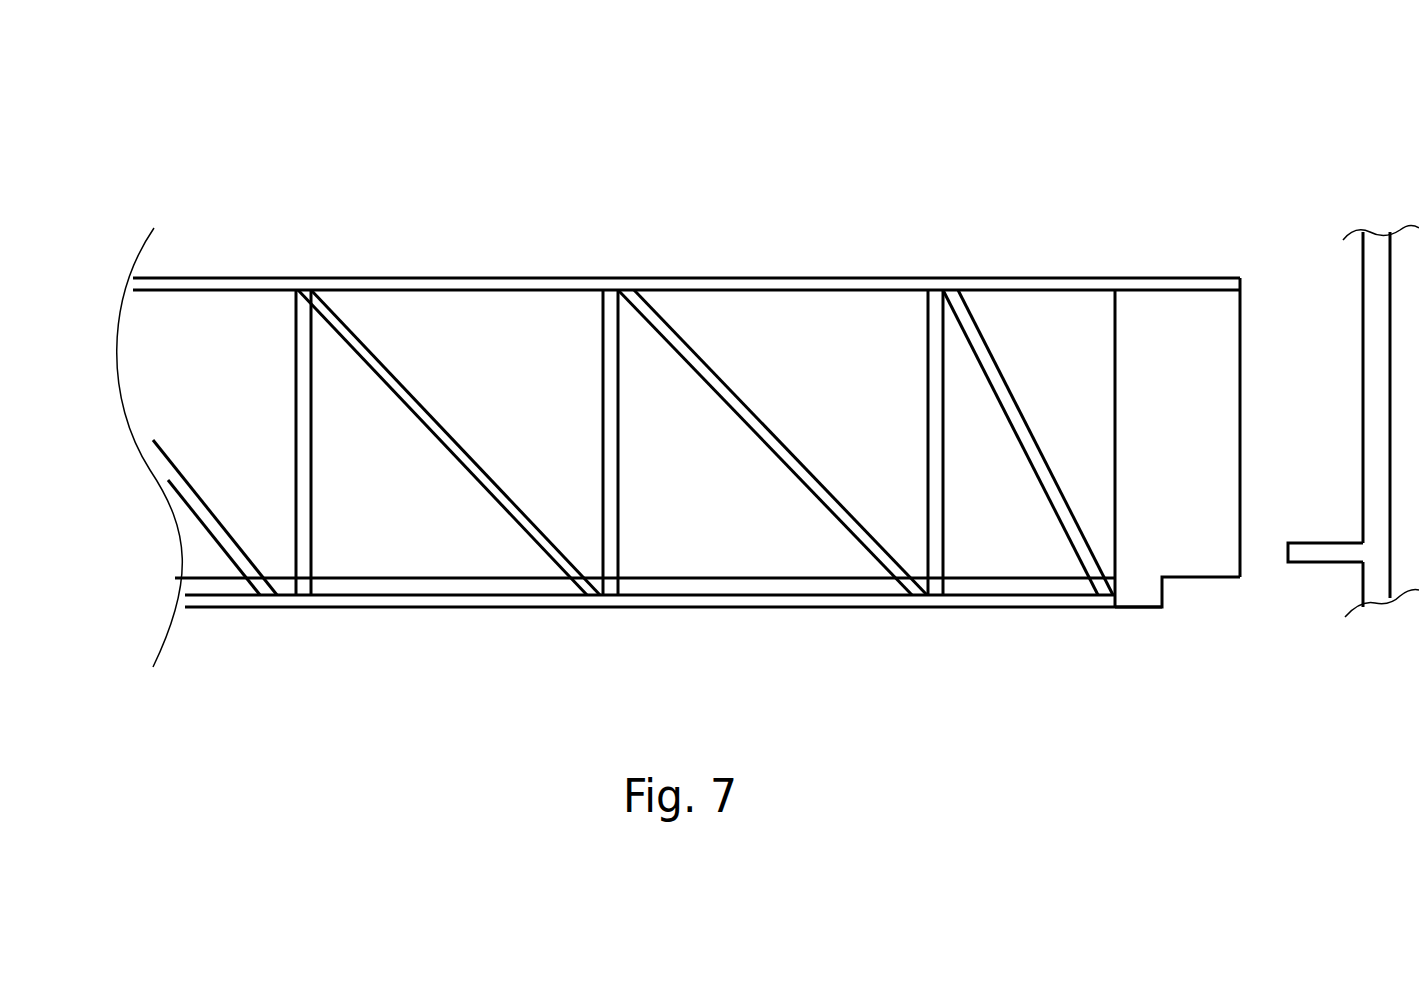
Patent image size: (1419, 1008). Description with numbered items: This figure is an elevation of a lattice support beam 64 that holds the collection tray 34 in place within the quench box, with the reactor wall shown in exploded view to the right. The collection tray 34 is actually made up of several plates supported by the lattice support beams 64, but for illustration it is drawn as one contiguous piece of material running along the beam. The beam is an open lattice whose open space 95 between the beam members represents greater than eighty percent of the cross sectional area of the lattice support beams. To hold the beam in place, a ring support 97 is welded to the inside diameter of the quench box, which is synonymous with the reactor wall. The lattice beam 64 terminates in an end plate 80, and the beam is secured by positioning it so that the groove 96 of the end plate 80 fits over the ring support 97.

The collection tray 34 is at (212, 587).
The lattice support beam 64 is at (525, 275).
The end plate 80 is at (1215, 325).
The open space 95 is at (669, 447).
The groove 96 is at (1217, 587).
The ring support 97 is at (1323, 563).